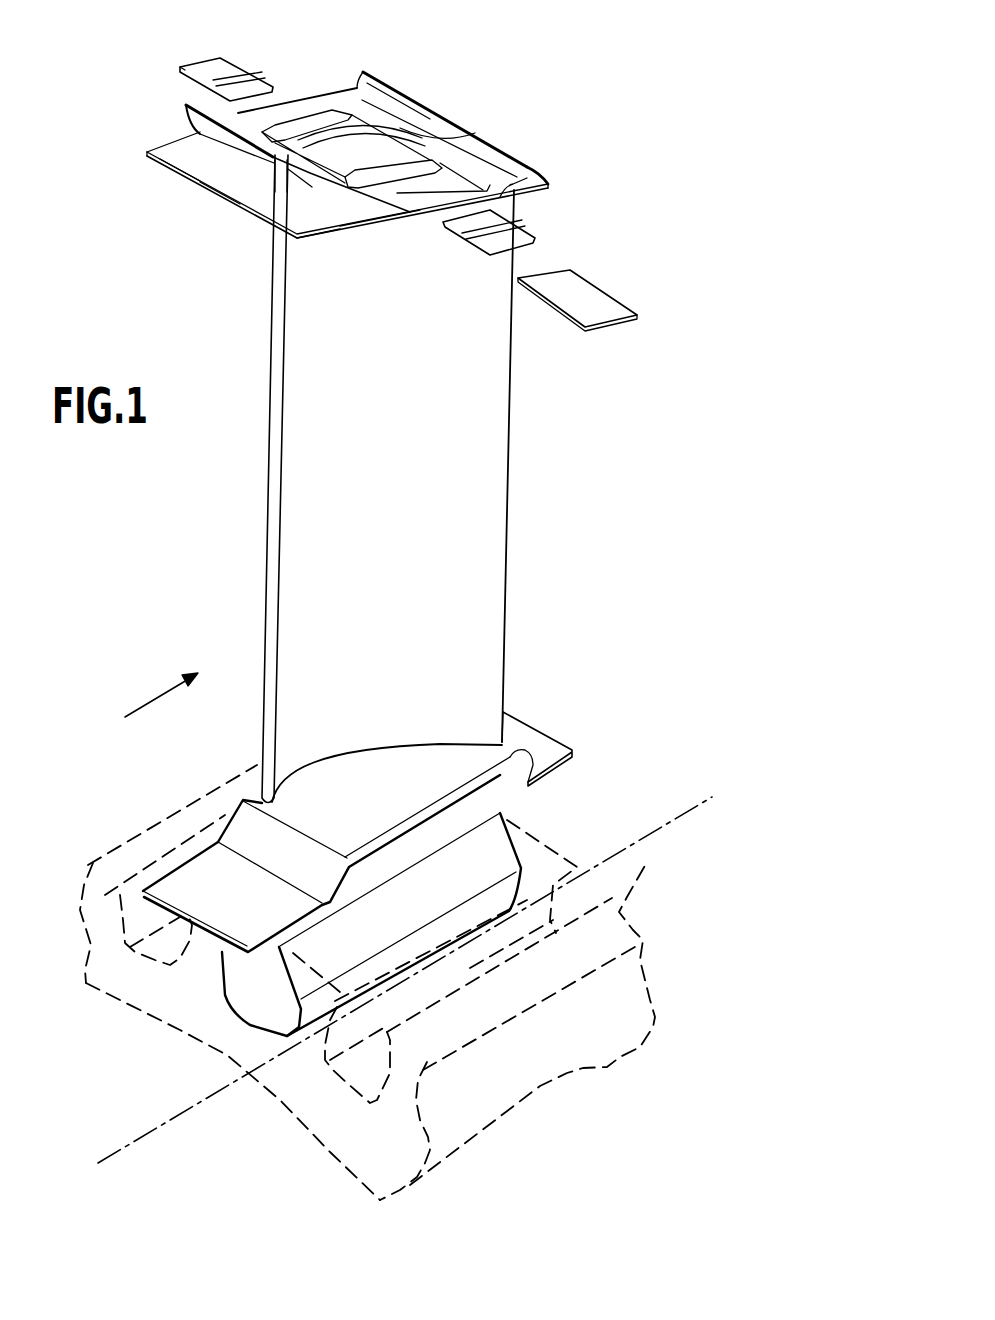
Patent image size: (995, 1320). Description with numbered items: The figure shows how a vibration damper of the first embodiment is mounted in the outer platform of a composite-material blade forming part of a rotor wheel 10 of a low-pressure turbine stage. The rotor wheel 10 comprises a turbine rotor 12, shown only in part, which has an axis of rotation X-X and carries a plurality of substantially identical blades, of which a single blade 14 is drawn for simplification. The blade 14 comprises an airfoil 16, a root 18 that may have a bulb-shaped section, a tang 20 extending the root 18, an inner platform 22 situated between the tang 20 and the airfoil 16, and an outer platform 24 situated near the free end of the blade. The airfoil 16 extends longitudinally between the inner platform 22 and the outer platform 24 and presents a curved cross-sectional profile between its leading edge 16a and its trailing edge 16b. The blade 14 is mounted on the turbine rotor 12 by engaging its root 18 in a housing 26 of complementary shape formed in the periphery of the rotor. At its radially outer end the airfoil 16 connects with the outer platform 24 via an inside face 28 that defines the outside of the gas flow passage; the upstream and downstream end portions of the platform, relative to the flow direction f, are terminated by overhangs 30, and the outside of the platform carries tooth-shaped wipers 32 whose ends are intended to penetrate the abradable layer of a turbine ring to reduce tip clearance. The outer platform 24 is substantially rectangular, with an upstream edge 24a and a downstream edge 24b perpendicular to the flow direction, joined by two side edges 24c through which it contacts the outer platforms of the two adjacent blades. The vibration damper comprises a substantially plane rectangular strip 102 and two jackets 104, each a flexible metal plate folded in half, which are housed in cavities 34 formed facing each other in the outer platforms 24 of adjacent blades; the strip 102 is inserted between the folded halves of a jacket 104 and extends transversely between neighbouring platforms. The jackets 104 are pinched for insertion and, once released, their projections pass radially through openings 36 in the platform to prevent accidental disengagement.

The rotor wheel 10 is at (166, 1030).
The turbine rotor 12 is at (647, 868).
The blade 14 is at (237, 523).
The airfoil 16 is at (440, 467).
The leading edge 16a is at (270, 400).
The trailing edge 16b is at (514, 430).
The root 18 is at (258, 996).
The tang 20 is at (468, 800).
The inner platform 22 is at (528, 733).
The outer platform 24 is at (502, 128).
The upstream edge 24a is at (258, 213).
The downstream edge 24b is at (550, 184).
The side edges 24c is at (168, 145).
The housing 26 is at (388, 1032).
The inside face 28 is at (327, 238).
The overhangs 30 is at (528, 178).
The wipers 32 is at (363, 72).
The cavities 34 is at (416, 206).
The openings 36 is at (296, 112).
The strip 102 is at (573, 291).
The jackets 104 is at (222, 61).